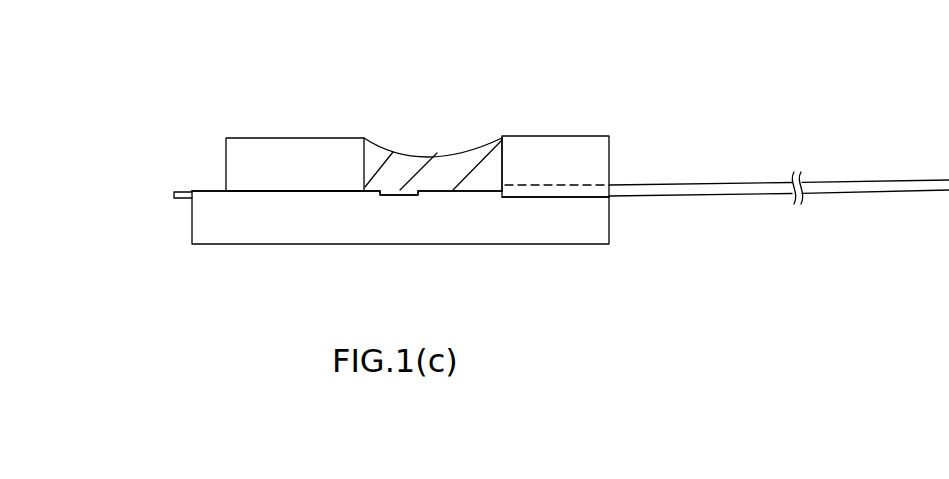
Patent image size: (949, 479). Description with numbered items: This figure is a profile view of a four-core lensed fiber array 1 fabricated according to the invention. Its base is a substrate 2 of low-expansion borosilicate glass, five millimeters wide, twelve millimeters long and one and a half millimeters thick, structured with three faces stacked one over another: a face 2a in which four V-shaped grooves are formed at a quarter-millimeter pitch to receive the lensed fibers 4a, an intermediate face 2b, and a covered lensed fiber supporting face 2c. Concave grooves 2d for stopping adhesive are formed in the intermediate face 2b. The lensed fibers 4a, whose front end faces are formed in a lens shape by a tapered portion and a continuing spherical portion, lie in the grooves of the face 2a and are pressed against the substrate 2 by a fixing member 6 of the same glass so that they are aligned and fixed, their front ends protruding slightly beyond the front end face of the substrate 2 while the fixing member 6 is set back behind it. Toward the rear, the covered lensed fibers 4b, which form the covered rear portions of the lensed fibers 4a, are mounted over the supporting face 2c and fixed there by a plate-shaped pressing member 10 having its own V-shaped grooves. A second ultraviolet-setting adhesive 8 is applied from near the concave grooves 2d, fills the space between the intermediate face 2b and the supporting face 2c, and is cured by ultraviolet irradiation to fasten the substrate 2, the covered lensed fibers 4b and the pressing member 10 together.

The lensed fiber array 1 is at (553, 100).
The substrate 2 is at (209, 228).
The face for forming grooves 2a is at (292, 195).
The intermediate face 2b is at (464, 197).
The covered lensed fiber supporting face 2c is at (562, 198).
The concave grooves 2d is at (388, 197).
The lensed fibers 4a is at (183, 191).
The covered lensed fibers 4b is at (681, 192).
The fixing member 6 is at (282, 157).
The second ultraviolet-setting adhesive 8 is at (414, 158).
The pressing member 10 is at (583, 148).